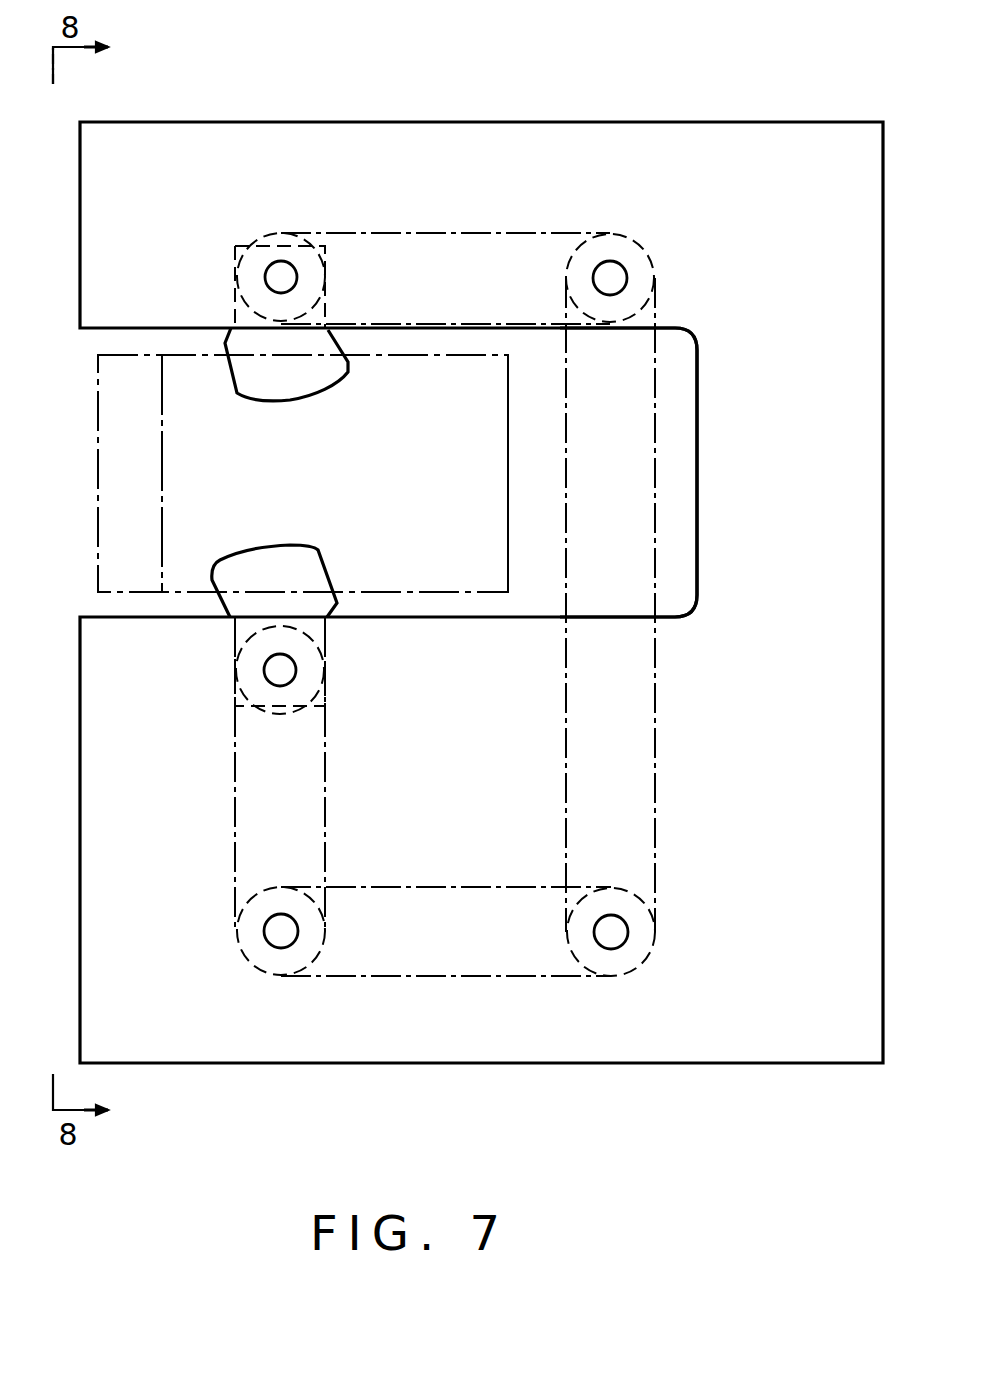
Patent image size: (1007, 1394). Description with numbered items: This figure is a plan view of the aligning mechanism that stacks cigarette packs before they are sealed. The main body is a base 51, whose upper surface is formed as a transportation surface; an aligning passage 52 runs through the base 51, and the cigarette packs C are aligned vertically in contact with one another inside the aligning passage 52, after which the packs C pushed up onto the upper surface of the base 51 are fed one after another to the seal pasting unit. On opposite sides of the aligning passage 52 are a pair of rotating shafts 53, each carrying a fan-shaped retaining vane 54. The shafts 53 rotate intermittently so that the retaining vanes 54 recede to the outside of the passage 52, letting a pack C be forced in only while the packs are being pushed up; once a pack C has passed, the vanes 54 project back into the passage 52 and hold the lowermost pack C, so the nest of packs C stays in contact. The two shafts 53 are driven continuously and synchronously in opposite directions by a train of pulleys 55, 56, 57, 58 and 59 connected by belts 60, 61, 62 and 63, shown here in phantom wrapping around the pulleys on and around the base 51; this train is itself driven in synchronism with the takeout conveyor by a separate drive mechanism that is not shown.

The base 51 is at (797, 132).
The aligning passage 52 is at (690, 472).
The rotating shafts 53 is at (280, 277).
The retaining vane 54 is at (325, 378).
The pulley 55 is at (262, 233).
The pulley 56 is at (287, 715).
The pulley 57 is at (253, 972).
The pulley 58 is at (655, 938).
The pulley 59 is at (648, 253).
The belt 60 is at (233, 773).
The belt 61 is at (535, 976).
The belt 62 is at (655, 792).
The belt 63 is at (455, 232).
The cigarette pack C is at (413, 592).